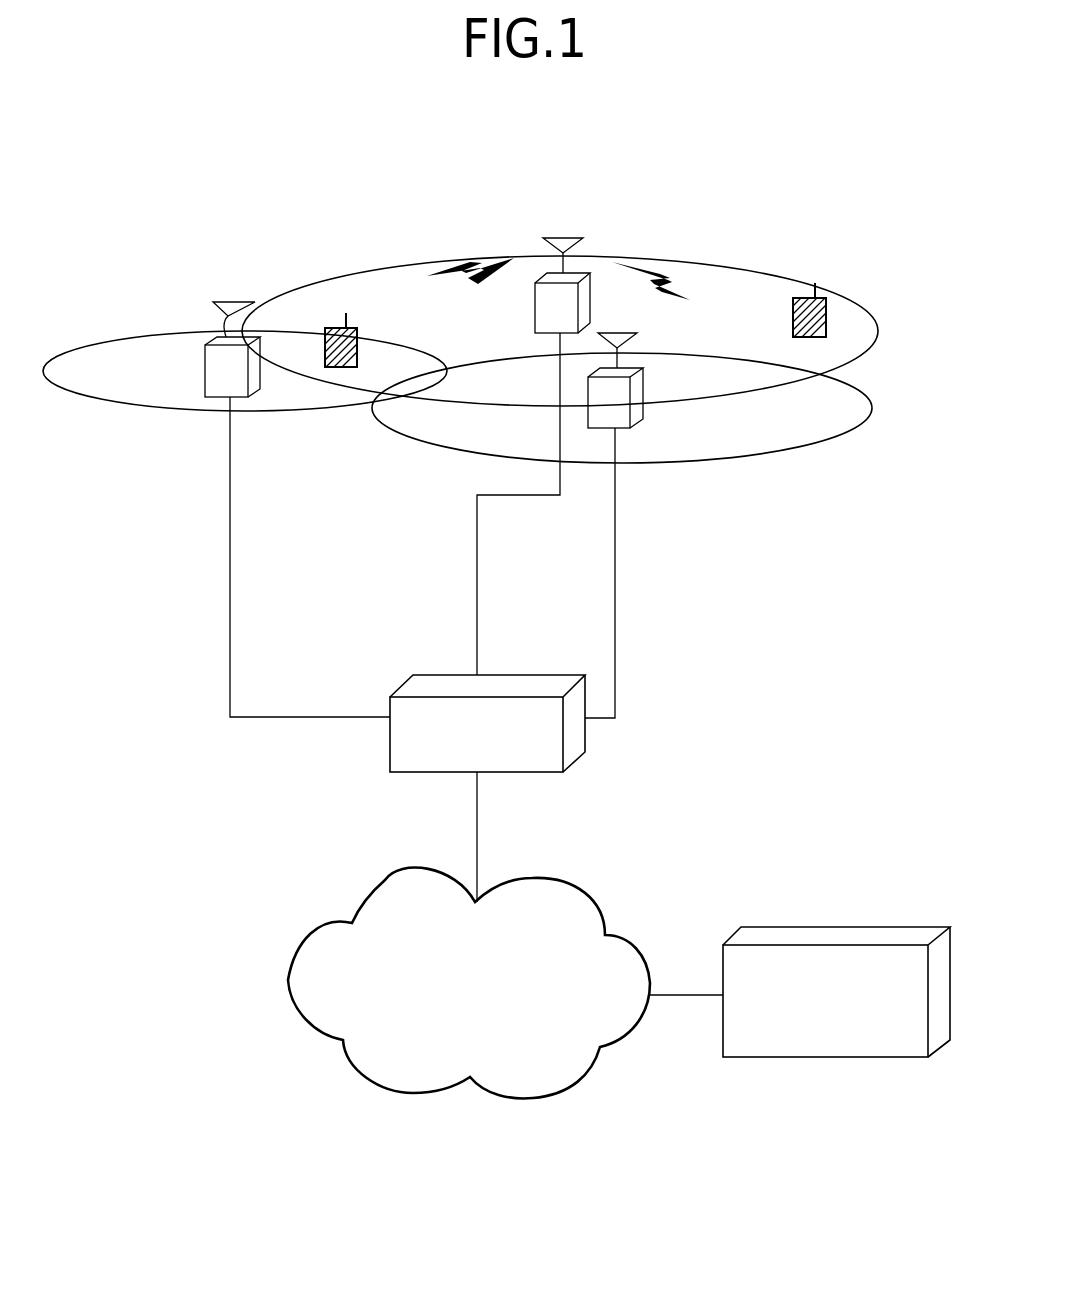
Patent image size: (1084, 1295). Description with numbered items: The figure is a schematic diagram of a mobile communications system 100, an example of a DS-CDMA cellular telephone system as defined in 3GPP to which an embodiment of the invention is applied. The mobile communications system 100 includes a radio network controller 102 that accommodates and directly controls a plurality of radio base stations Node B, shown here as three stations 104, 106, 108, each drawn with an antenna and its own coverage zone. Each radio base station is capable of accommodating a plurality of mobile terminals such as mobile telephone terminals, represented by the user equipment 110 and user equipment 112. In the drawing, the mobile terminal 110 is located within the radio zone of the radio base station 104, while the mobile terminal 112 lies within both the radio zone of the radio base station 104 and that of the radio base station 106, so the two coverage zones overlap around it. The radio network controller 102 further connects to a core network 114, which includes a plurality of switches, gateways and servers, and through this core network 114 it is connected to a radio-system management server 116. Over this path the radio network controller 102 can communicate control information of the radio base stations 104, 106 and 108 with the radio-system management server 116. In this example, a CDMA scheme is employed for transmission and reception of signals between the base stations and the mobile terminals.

The mobile communications system 100 is at (508, 1162).
The radio network controller 102 is at (543, 675).
The radio base station Node B 104 is at (550, 238).
The radio base station Node B 106 is at (222, 301).
The radio base station Node B 108 is at (643, 410).
The mobile terminal 110 is at (818, 292).
The mobile terminal 112 is at (350, 325).
The core network 114 is at (594, 897).
The radio-system management server 116 is at (838, 927).